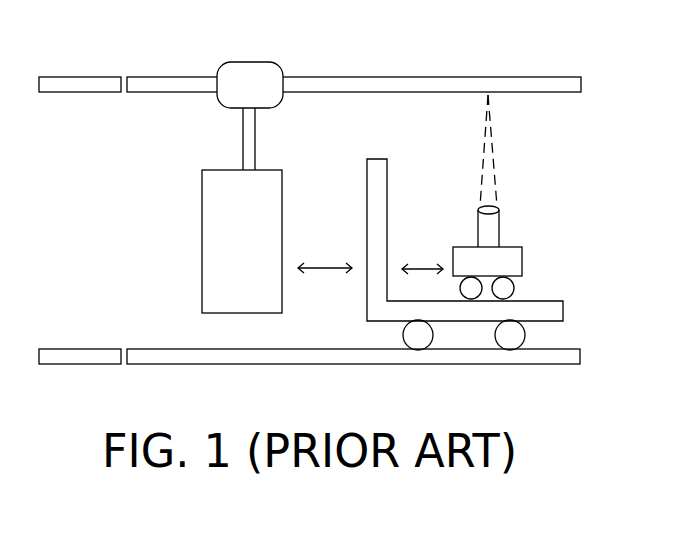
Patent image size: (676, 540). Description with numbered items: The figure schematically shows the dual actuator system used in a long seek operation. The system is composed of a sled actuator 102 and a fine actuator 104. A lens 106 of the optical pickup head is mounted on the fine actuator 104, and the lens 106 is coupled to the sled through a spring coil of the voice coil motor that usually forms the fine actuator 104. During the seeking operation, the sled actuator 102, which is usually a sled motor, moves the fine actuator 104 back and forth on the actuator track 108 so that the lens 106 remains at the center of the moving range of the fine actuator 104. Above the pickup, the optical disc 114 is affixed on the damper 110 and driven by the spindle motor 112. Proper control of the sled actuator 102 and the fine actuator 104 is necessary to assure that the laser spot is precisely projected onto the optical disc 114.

The sled actuator 102 is at (548, 314).
The fine actuator 104 is at (512, 264).
The lens 106 is at (485, 210).
The actuator track 108 is at (532, 358).
The damper 110 is at (268, 62).
The spindle motor 112 is at (272, 170).
The optical disc 114 is at (433, 86).